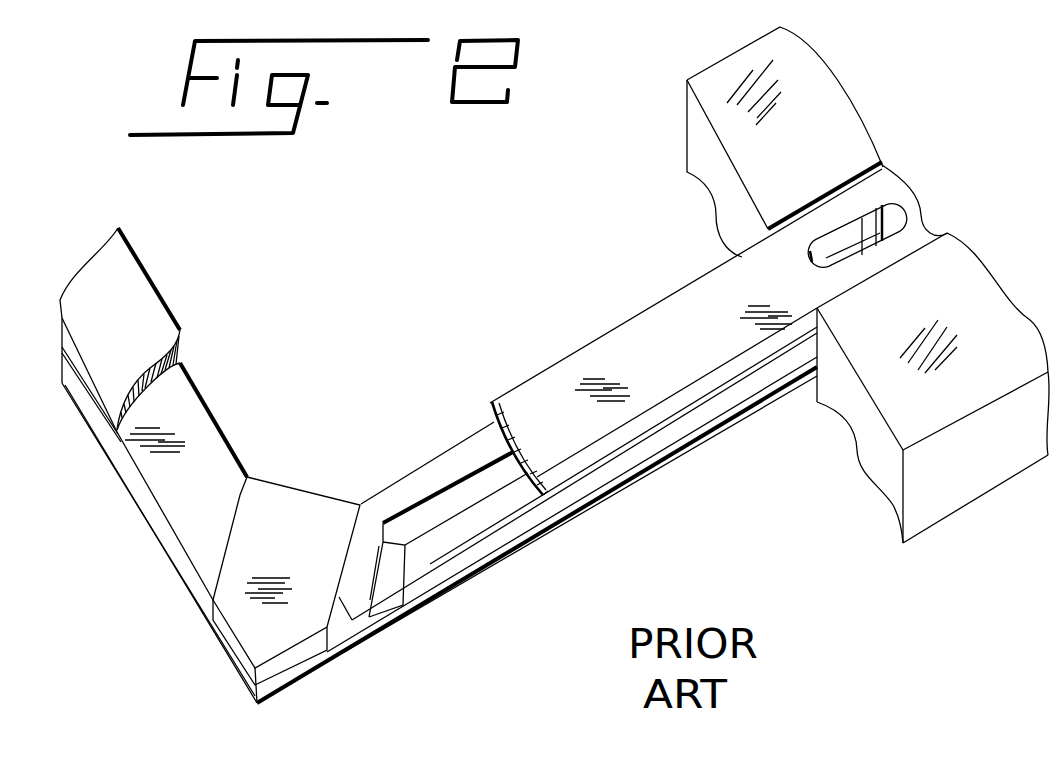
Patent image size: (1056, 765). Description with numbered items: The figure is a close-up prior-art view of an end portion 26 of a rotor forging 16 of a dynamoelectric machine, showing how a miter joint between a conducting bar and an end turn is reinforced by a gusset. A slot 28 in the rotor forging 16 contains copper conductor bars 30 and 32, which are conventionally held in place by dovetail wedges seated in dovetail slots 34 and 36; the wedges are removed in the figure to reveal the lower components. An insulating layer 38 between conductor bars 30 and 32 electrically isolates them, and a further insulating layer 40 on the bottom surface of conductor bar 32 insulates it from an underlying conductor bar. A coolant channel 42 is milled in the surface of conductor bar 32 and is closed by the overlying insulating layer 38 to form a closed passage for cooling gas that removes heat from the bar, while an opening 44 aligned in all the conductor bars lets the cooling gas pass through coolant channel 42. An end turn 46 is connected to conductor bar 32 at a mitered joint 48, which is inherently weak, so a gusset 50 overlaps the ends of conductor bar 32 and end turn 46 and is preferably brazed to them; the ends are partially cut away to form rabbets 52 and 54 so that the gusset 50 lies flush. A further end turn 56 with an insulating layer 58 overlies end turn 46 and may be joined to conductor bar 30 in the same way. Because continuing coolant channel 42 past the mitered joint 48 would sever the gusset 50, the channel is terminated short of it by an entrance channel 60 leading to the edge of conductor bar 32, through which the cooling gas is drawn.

The rotor forging 16 is at (694, 110).
The end portion 26 is at (603, 205).
The slot 28 is at (817, 402).
The conductor bar 30 is at (699, 398).
The conductor bar 32 is at (727, 410).
The dovetail slot 34 is at (873, 174).
The dovetail slot 36 is at (816, 310).
The insulating layer 38 is at (658, 432).
The insulating layer 40 is at (615, 490).
The coolant channel 42 is at (467, 502).
The opening 44 is at (897, 205).
The end turn 46 is at (210, 457).
The mitered joint 48 is at (258, 694).
The gusset 50 is at (330, 522).
The rabbet 52 is at (339, 597).
The rabbet 54 is at (253, 483).
The end turn 56 is at (150, 307).
The insulating layer 58 is at (180, 363).
The entrance channel 60 is at (392, 565).